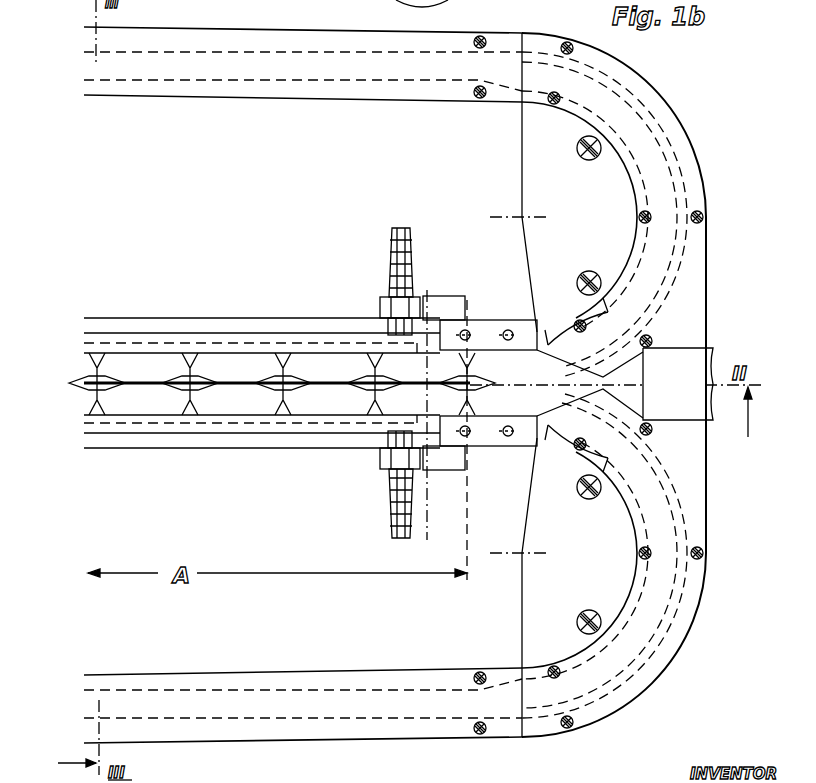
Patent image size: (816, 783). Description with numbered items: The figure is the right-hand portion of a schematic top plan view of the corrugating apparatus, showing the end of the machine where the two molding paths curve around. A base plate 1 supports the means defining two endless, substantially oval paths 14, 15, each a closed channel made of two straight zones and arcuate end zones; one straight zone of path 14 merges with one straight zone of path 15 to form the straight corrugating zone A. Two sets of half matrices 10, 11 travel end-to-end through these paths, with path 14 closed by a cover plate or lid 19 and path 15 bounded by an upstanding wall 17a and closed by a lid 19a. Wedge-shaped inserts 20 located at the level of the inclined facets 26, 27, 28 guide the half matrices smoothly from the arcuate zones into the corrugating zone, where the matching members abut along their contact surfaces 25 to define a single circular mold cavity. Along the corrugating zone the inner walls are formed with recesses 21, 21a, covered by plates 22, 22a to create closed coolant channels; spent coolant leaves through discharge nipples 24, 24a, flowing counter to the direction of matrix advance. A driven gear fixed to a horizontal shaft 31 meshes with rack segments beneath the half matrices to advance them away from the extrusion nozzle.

The base plate 1 is at (700, 305).
The half matrices 10 is at (340, 362).
The half matrices 11 is at (237, 408).
The endless path 14 is at (128, 67).
The endless path 15 is at (264, 705).
The upstanding wall 17a is at (572, 448).
The cover plate or lid 19 is at (276, 30).
The cover plate or lid 19a is at (300, 727).
The wedge-shaped inserts 20 is at (625, 384).
The recess 21 is at (350, 320).
The recess 21a is at (232, 440).
The plate 22 is at (220, 318).
The plate 22a is at (353, 446).
The discharge nipple 24 is at (392, 240).
The discharge nipple 24a is at (390, 512).
The contact surfaces 25 is at (193, 383).
The facet 26 is at (153, 482).
The facet 27 is at (184, 482).
The facet 28 is at (124, 482).
The horizontal shaft 31 is at (403, 9).